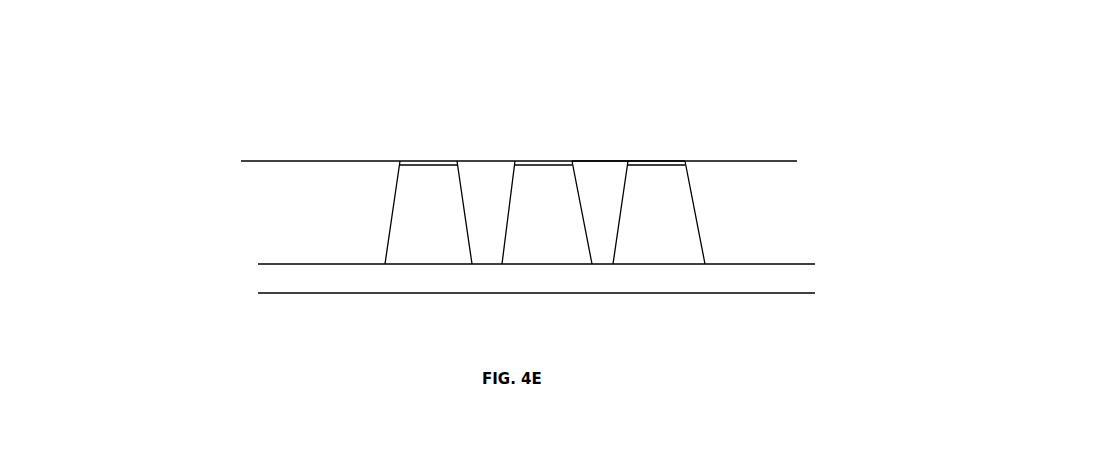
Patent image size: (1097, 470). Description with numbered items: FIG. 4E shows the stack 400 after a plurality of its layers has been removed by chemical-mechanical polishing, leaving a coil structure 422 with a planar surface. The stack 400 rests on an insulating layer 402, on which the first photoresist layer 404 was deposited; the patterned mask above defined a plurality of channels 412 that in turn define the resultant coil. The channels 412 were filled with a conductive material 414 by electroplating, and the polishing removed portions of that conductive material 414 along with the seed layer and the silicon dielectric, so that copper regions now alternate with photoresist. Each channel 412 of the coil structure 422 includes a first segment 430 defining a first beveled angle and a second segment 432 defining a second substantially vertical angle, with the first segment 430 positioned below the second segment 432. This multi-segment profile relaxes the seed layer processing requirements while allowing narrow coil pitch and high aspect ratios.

The stack 400 is at (763, 328).
The insulating layer 402 is at (257, 278).
The first photoresist layer 404 is at (393, 202).
The channels 412 is at (608, 125).
The conductive material 414 is at (723, 217).
The coil structure 422 is at (293, 247).
The first segment 430 is at (622, 233).
The second segment 432 is at (627, 175).